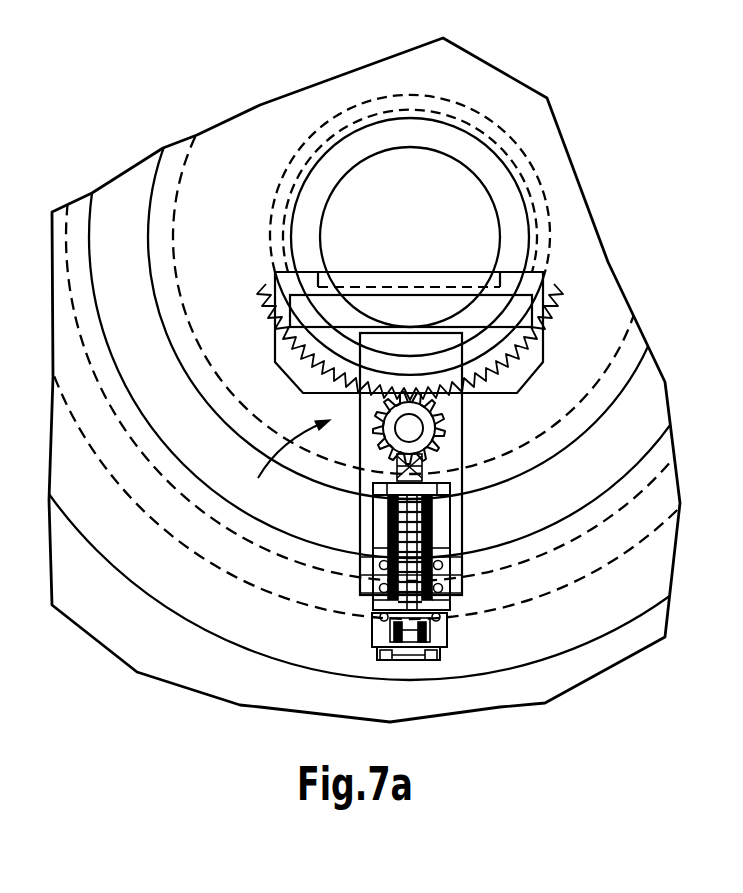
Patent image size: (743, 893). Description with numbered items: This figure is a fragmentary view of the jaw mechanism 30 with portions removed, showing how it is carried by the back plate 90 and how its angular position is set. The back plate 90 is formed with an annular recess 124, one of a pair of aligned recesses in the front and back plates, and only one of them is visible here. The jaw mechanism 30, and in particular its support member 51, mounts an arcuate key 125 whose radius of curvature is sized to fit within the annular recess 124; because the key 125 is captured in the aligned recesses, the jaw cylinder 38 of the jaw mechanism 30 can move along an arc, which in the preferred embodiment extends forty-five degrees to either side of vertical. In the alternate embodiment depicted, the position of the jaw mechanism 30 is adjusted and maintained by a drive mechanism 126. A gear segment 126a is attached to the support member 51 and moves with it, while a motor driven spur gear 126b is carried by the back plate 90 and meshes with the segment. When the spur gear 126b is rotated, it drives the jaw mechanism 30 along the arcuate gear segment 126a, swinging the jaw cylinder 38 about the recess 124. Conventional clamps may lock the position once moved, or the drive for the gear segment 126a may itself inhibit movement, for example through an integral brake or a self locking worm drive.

The back plate 90 is at (540, 118).
The annular recess 124 is at (284, 188).
The gear segment 126a is at (560, 288).
The support member 51 is at (542, 357).
The arcuate key 125 is at (325, 342).
The spur gear 126b is at (443, 432).
The drive mechanism 126 is at (285, 462).
The jaw mechanism 30 is at (482, 520).
The jaw cylinder 38 is at (447, 636).